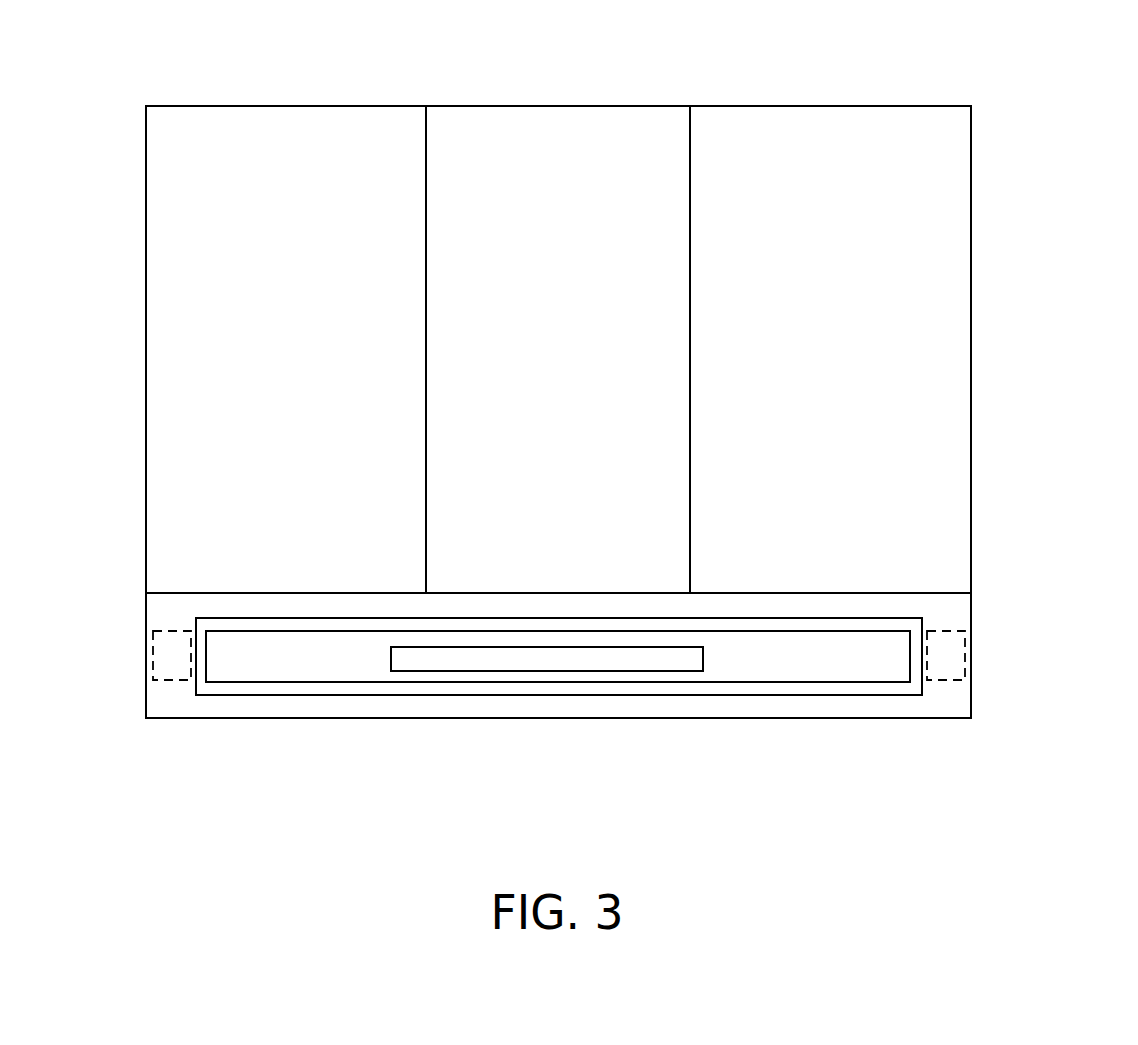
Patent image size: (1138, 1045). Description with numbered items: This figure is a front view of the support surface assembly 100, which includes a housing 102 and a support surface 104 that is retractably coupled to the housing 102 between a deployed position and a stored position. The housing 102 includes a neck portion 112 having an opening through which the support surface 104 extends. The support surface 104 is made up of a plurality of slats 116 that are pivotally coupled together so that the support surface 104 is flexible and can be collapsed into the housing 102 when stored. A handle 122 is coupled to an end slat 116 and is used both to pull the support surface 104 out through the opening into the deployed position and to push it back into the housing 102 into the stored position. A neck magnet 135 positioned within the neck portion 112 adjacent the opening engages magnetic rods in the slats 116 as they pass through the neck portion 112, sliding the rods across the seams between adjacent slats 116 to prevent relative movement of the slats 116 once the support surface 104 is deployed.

The support surface assembly 100 is at (1037, 136).
The housing 102 is at (971, 243).
The support surface 104 is at (860, 660).
The neck portion 112 is at (176, 706).
The slats 116 is at (307, 655).
The handle 122 is at (595, 659).
The neck magnet 135 is at (176, 655).